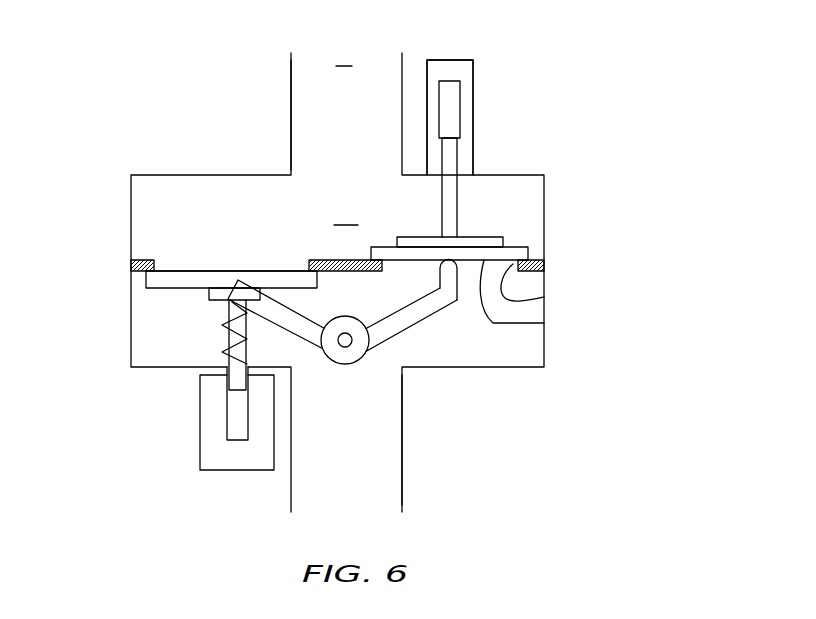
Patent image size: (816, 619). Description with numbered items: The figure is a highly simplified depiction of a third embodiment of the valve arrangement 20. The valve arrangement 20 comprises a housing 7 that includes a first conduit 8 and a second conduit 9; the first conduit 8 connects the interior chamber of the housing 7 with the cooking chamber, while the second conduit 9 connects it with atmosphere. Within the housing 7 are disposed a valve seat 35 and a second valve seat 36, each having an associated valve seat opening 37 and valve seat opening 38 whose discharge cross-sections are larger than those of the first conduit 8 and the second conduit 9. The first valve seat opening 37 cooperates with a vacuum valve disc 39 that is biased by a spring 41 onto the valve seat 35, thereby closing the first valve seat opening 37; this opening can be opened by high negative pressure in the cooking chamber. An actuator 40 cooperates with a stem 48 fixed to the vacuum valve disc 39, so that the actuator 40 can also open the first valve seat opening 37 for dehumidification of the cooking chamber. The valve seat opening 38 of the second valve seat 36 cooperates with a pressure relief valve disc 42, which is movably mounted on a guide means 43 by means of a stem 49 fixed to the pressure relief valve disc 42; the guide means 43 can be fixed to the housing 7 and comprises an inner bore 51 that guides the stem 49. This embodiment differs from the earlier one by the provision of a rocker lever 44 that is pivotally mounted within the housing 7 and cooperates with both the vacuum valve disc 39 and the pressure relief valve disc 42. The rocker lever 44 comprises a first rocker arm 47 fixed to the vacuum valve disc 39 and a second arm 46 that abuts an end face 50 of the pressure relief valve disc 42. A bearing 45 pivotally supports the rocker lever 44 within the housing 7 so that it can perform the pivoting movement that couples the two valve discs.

The valve arrangement 20 is at (565, 58).
The housing 7 is at (129, 233).
The first conduit 8 is at (404, 414).
The second conduit 9 is at (287, 118).
The valve seat 35 is at (131, 262).
The second valve seat 36 is at (544, 265).
The first valve seat opening 37 is at (152, 268).
The valve seat opening 38 is at (544, 297).
The vacuum valve disc 39 is at (158, 291).
The actuator 40 is at (198, 446).
The spring 41 is at (218, 325).
The pressure relief valve disc 42 is at (505, 242).
The guide means 43 is at (478, 140).
The rocker lever 44 is at (421, 334).
The bearing 45 is at (347, 342).
The second arm 46 is at (425, 307).
The first rocker arm 47 is at (287, 322).
The stem 48 is at (236, 378).
The stem 49 is at (449, 196).
The end face 50 is at (544, 323).
The inner bore 51 is at (448, 95).